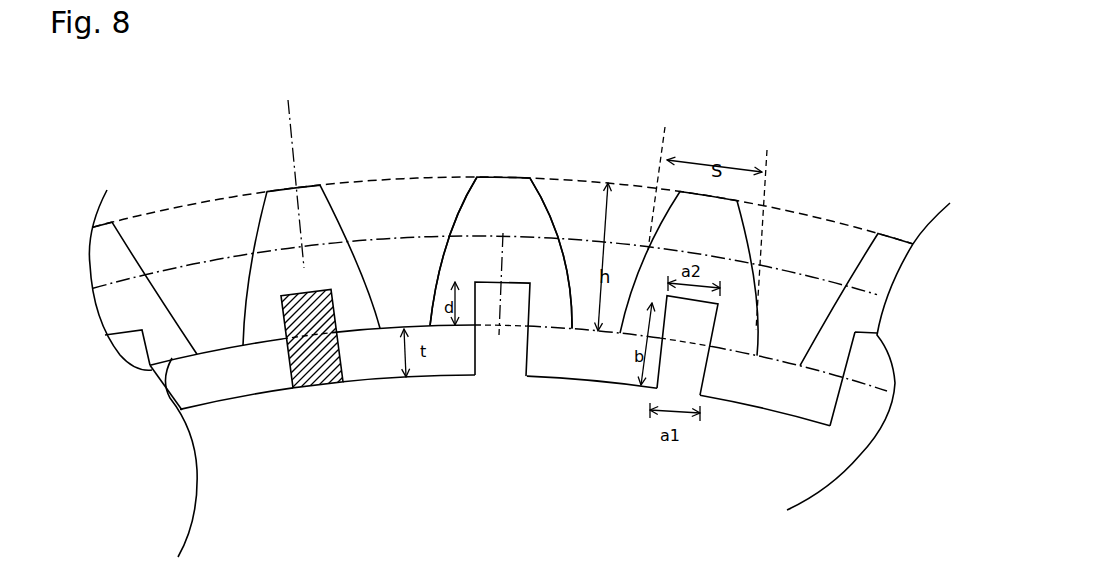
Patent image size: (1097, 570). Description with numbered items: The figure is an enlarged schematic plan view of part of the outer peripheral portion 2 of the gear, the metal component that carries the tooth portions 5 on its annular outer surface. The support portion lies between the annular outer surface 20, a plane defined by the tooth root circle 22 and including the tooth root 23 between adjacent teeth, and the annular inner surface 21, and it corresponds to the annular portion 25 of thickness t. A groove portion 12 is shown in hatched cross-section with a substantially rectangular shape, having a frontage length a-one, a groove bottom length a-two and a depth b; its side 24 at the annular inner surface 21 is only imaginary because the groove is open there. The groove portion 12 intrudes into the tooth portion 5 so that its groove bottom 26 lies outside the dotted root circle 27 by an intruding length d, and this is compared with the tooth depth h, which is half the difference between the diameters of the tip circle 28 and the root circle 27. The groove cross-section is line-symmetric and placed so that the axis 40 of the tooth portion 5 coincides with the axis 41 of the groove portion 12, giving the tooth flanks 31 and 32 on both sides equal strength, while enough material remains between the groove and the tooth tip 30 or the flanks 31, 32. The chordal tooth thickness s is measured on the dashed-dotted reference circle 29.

The outer peripheral portion 2 is at (783, 403).
The tooth portion 5 is at (493, 200).
The groove portion 12 is at (318, 372).
The annular outer surface 20 is at (218, 357).
The annular inner surface 21 is at (267, 397).
The tooth root circle 22 is at (167, 390).
The tooth root 23 is at (767, 360).
The portion corresponding to the annular inner surface 24 is at (305, 383).
The annular portion 25 is at (392, 357).
The groove bottom 26 is at (298, 295).
The root circle 27 is at (857, 387).
The tip circle 28 is at (403, 179).
The reference circle 29 is at (797, 272).
The tooth tip 30 is at (310, 187).
The tooth flank 31 is at (457, 217).
The tooth flank 32 is at (552, 212).
The axis of the tooth portion 40 is at (293, 120).
The axis of the groove portion 41 is at (503, 253).